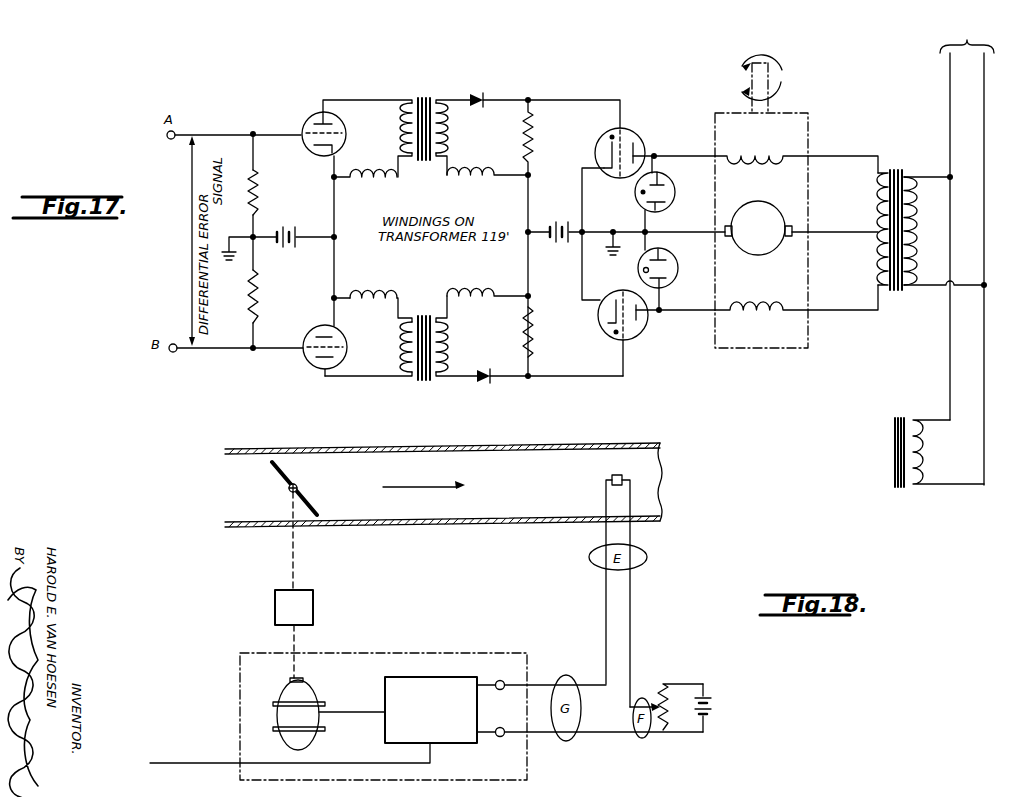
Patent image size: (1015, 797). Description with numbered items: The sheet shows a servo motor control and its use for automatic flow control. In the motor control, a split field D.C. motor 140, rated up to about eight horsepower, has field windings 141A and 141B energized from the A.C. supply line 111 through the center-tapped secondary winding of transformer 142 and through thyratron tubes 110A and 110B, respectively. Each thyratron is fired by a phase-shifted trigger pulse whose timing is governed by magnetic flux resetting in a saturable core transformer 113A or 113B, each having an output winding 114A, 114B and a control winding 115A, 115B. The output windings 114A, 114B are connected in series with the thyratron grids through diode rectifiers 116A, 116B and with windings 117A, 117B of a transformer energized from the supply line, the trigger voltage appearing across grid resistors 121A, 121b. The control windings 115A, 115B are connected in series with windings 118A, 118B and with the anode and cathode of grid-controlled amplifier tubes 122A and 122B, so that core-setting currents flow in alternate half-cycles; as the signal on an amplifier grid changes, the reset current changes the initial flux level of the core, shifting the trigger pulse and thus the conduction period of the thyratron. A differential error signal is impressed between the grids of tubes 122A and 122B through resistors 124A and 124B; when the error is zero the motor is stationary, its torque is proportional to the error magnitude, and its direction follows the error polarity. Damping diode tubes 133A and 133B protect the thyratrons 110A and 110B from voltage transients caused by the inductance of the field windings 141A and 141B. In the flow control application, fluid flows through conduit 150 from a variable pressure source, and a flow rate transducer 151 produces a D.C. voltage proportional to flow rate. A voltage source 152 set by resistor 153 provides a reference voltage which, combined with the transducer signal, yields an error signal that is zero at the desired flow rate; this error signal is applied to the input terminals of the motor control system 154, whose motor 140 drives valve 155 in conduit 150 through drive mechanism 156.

In FIG. 17, the A.C. supply line 111 is at (967, 252).
In FIG. 17, the thyratron tube 110A is at (640, 136).
In FIG. 17, the thyratron tube 110B is at (640, 342).
In FIG. 17, the saturable core transformer 113A is at (422, 97).
In FIG. 17, the saturable core transformer 113B is at (425, 381).
In FIG. 17, the output winding 114A is at (447, 138).
In FIG. 17, the output winding 114B is at (459, 344).
In FIG. 17, the control winding 115A is at (399, 134).
In FIG. 17, the control winding 115B is at (399, 355).
In FIG. 17, the diode rectifier 116A is at (478, 93).
In FIG. 17, the diode rectifier 116B is at (480, 384).
In FIG. 17, the winding of transformer 119 117A is at (460, 183).
In FIG. 17, the winding of transformer 119 117B is at (466, 290).
In FIG. 17, the winding of transformer 119 118A is at (358, 184).
In FIG. 17, the winding of transformer 119 118B is at (366, 290).
In FIG. 17, the grid resistor 121A is at (532, 142).
In FIG. 17, the grid resistor 121b is at (532, 338).
In FIG. 17, the grid-controlled amplifier tube 122A is at (306, 119).
In FIG. 17, the grid-controlled amplifier tube 122B is at (306, 355).
In FIG. 17, the grid resistor 124A is at (258, 188).
In FIG. 17, the grid resistor 124B is at (258, 312).
In FIG. 17, the damping diode tube 133A is at (672, 200).
In FIG. 17, the damping diode tube 133B is at (675, 276).
In FIG. 17, the split field D.C. motor 140 is at (825, 128).
In FIG. 18, the split field D.C. motor 140 is at (312, 689).
In FIG. 17, the field winding 141A is at (787, 153).
In FIG. 17, the field winding 141B is at (742, 320).
In FIG. 17, the transformer 142 is at (896, 292).
In FIG. 18, the conduit 150 is at (430, 526).
In FIG. 18, the flow rate transducer 151 is at (614, 471).
In FIG. 18, the voltage source 152 is at (714, 704).
In FIG. 18, the resistor 153 is at (660, 683).
In FIG. 18, the motor control system 154 is at (457, 652).
In FIG. 18, the valve 155 is at (300, 492).
In FIG. 18, the drive mechanism 156 is at (327, 592).